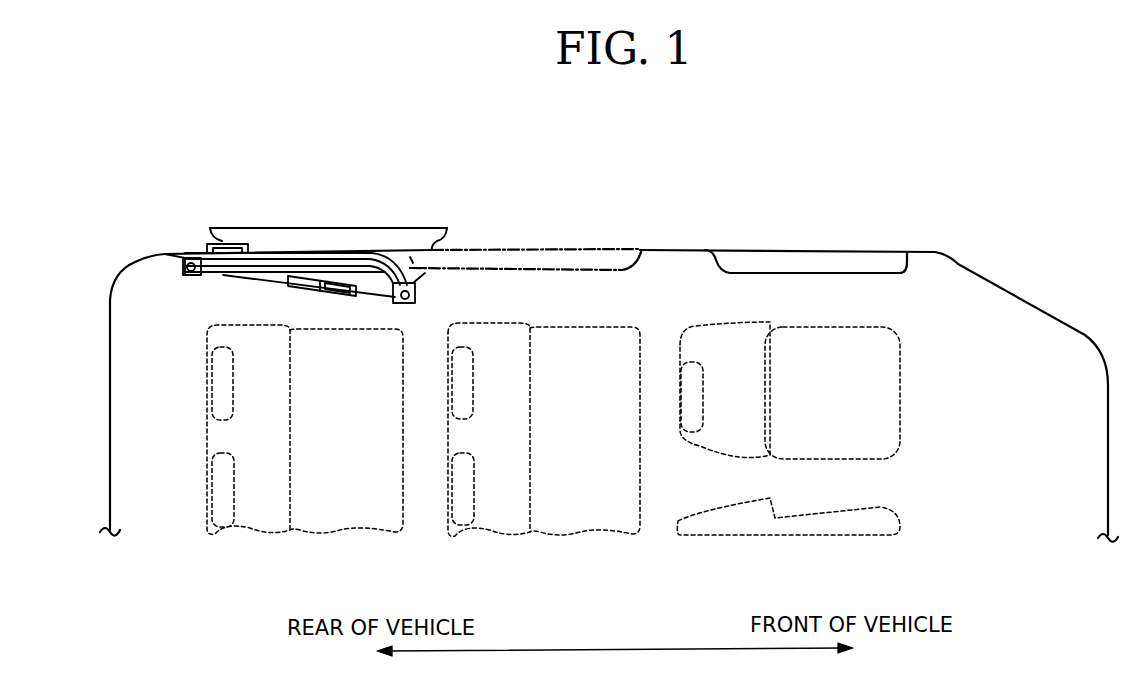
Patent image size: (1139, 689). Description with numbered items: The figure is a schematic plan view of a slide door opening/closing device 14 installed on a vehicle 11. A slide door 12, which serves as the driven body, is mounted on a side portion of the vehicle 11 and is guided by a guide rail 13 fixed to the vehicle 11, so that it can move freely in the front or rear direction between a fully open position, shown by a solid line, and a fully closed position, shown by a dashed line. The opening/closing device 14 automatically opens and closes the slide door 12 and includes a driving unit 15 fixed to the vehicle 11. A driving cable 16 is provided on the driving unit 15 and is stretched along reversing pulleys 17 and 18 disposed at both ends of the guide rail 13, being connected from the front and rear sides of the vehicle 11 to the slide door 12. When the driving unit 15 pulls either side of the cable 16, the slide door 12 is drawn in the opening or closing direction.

The vehicle 11 is at (951, 258).
The slide door 12 is at (357, 224).
The guide rail 13 is at (306, 248).
The opening/closing device 14 is at (320, 313).
The driving unit 15 is at (303, 281).
The driving cable 16 is at (246, 276).
The reversing pulley 17 is at (184, 267).
The reversing pulley 18 is at (418, 296).